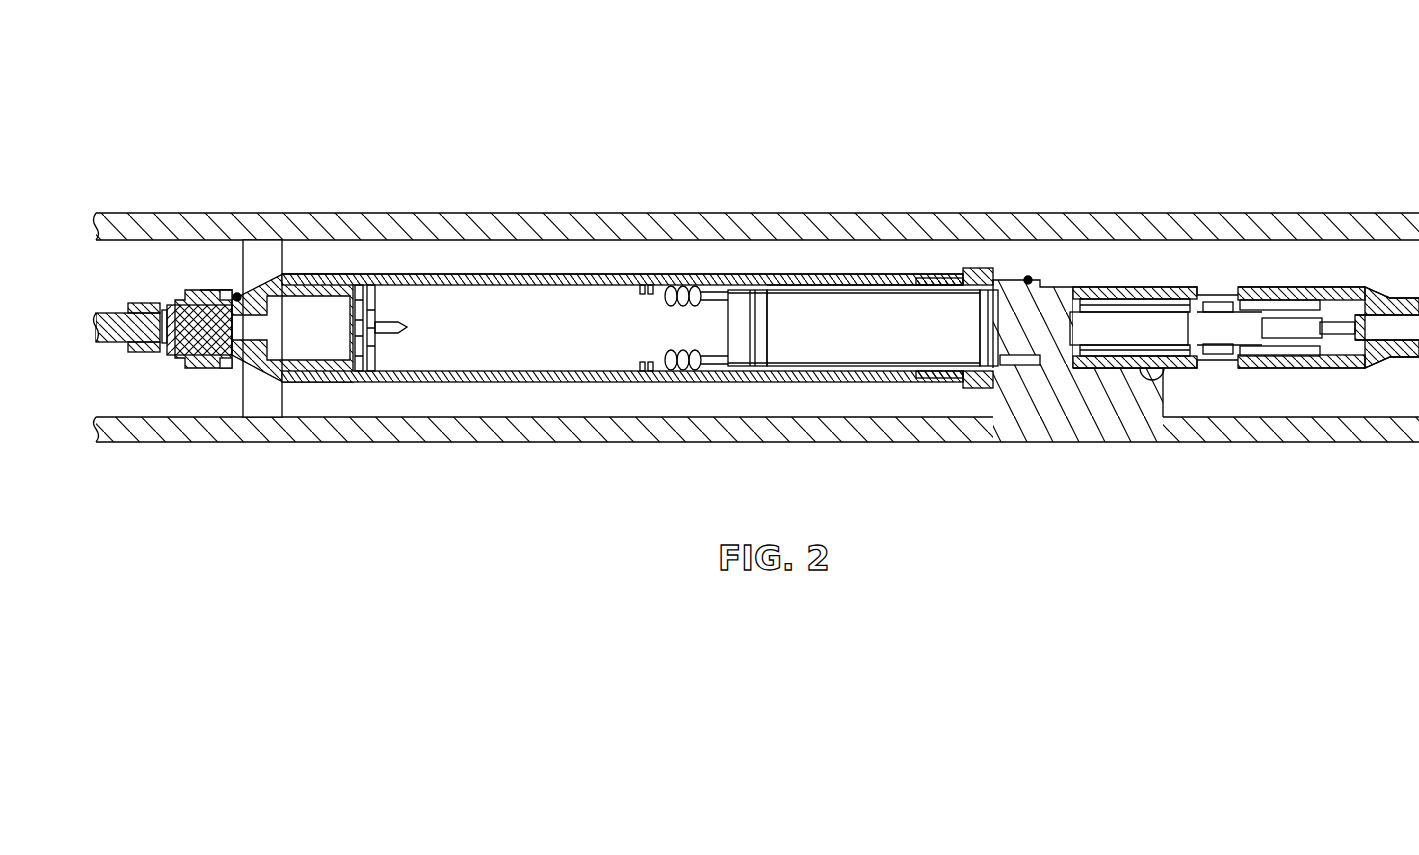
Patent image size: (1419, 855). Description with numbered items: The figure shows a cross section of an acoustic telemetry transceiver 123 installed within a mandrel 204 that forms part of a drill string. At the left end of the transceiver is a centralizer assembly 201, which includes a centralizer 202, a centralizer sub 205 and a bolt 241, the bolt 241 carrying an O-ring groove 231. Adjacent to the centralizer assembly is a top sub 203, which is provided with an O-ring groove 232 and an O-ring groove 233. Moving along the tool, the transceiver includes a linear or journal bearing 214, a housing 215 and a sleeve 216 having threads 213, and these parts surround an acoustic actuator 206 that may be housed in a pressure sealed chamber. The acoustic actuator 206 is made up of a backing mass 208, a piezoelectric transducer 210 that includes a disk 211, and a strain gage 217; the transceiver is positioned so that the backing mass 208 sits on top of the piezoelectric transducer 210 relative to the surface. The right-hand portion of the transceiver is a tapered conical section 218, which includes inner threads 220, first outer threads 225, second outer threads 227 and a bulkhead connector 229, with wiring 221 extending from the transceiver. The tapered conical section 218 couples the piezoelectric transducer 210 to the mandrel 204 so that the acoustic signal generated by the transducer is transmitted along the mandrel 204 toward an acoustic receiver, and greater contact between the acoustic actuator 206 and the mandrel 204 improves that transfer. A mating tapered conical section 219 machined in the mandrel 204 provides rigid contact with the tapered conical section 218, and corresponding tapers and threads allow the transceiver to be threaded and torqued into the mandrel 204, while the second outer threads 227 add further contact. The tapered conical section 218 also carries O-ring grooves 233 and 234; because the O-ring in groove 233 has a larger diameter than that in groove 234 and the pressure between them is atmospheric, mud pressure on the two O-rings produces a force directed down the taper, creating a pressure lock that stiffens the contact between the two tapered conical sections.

The acoustic telemetry transceiver 123 is at (1245, 111).
The centralizer assembly 201 is at (207, 368).
The centralizer 202 is at (260, 248).
The top sub 203 is at (290, 274).
The mandrel 204 is at (438, 213).
The centralizer sub 205 is at (200, 300).
The acoustic actuator 206 is at (574, 258).
The backing mass 208 is at (463, 275).
The piezoelectric transducer 210 is at (857, 366).
The disk 211 is at (728, 325).
The threads 213 is at (668, 360).
The linear bearing 214 is at (495, 382).
The housing 215 is at (428, 382).
The sleeve 216 is at (783, 283).
The strain gage 217 is at (828, 285).
The tapered conical section 218 is at (1012, 285).
The tapered conical section 219 is at (1105, 410).
The inner threads 220 is at (985, 387).
The wiring 221 is at (1228, 330).
The first outer threads 225 is at (975, 274).
The second outer threads 227 is at (1148, 371).
The bulkhead connector 229 is at (1020, 385).
The O-ring groove 231 is at (128, 313).
The O-ring groove 232 is at (178, 314).
The O-ring groove 233 is at (235, 295).
The O-ring groove 234 is at (1120, 287).
The bolt 241 is at (114, 346).